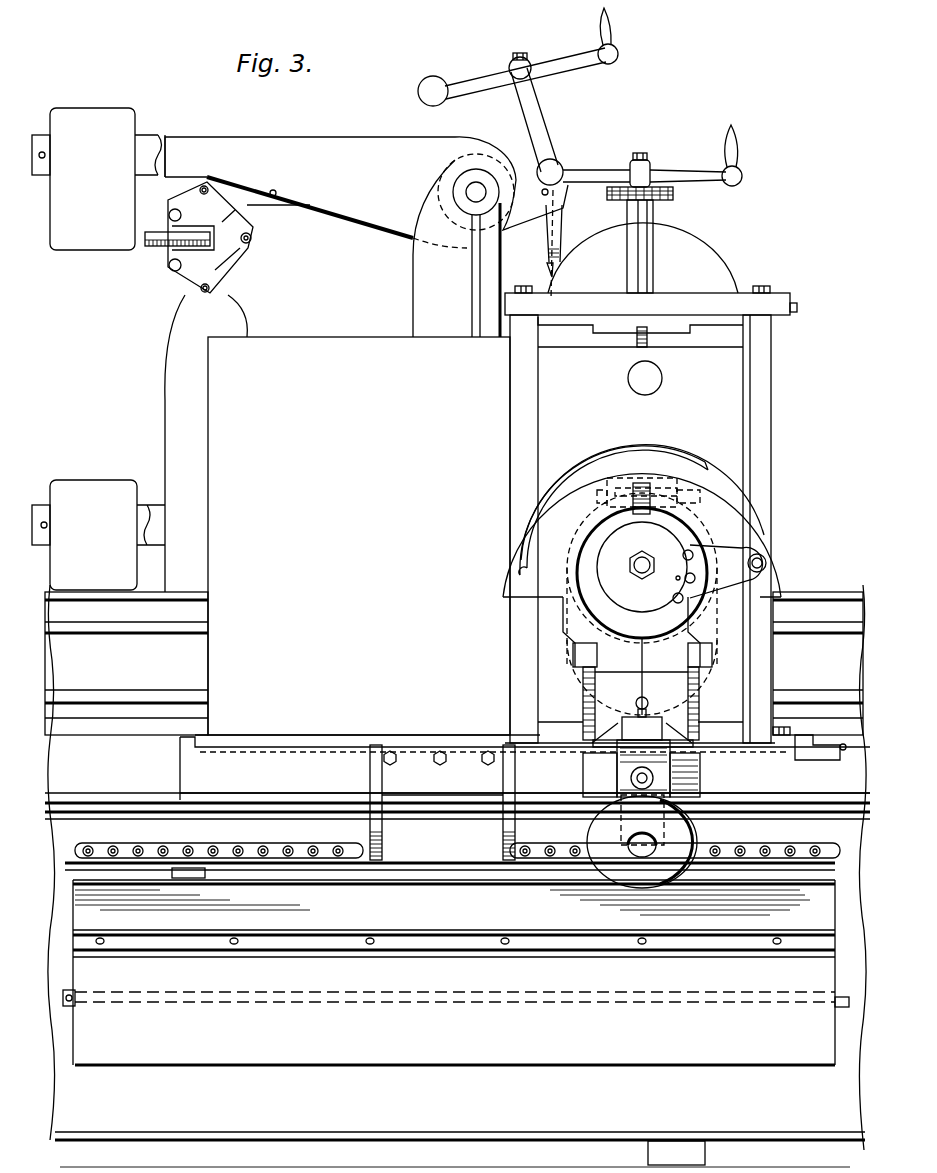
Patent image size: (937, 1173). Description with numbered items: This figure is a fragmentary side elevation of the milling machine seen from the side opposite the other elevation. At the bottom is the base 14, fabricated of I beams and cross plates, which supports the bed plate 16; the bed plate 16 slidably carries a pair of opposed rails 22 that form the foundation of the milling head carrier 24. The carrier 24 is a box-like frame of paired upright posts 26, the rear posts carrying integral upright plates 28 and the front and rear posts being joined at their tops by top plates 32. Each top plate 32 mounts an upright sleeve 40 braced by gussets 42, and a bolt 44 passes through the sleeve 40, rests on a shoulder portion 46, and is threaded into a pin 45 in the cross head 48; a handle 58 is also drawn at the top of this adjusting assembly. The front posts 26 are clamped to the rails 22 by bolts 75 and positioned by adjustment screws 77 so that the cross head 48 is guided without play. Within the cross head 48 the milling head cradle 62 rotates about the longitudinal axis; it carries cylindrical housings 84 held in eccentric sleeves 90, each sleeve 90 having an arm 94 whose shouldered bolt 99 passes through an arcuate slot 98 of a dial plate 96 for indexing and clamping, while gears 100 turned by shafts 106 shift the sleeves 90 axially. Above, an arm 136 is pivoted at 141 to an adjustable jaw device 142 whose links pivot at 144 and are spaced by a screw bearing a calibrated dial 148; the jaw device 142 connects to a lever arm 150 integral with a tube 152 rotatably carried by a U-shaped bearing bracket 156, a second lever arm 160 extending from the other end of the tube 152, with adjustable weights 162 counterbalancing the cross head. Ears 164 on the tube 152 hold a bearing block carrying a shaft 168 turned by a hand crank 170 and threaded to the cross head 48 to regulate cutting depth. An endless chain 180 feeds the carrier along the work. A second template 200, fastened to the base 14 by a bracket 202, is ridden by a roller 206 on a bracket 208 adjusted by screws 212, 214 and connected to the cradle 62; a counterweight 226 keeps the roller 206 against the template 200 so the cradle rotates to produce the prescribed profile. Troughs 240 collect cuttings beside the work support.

The base 14 is at (457, 876).
The bed plate 16 is at (343, 797).
The rails 22 is at (525, 768).
The milling head carrier 24 is at (773, 381).
The upright posts 26 is at (512, 413).
The upright plates 28 is at (380, 336).
The top plates 32 is at (690, 300).
The upright sleeve 40 is at (630, 241).
The gussets 42 is at (648, 241).
The bolts 44 is at (636, 340).
The pins 45 is at (662, 378).
The shoulder portions 46 is at (673, 193).
The cross head 48 is at (706, 470).
The hand crank 58 is at (731, 134).
The milling head cradle 62 is at (618, 648).
The bolts 75 is at (770, 288).
The adjustment screws 77 is at (798, 312).
The cylindrical housings 84 is at (658, 563).
The eccentric sleeves 90 is at (632, 622).
The arm 94 is at (748, 548).
The dial plate 96 is at (750, 503).
The arcuate slots 98 is at (748, 531).
The shouldered bolts 99 is at (768, 564).
The gears 100 is at (640, 480).
The shafts 106 is at (623, 493).
The arm 136 is at (170, 367).
The pivotal connection 141 is at (236, 289).
The adjustable jaw device 142 is at (246, 262).
The pivotal connection 144 is at (253, 239).
The calibrated dial 148 is at (148, 234).
The lever arm 150 is at (270, 202).
The tube 152 is at (470, 189).
The U-shaped bearing bracket 156 is at (423, 257).
The second lever arm 160 is at (340, 136).
The adjustable weights 162 is at (98, 179).
The ears 164 is at (522, 178).
The shaft 168 is at (531, 99).
The hand crank 170 is at (600, 19).
The endless chain 180 is at (230, 850).
The second template 200 is at (748, 908).
The bracket 202 is at (762, 1048).
The roller 206 is at (680, 842).
The bracket 208 is at (655, 752).
The screw 212 is at (630, 779).
The screw 214 is at (642, 707).
The counterweight 226 is at (95, 490).
The troughs 240 is at (126, 683).